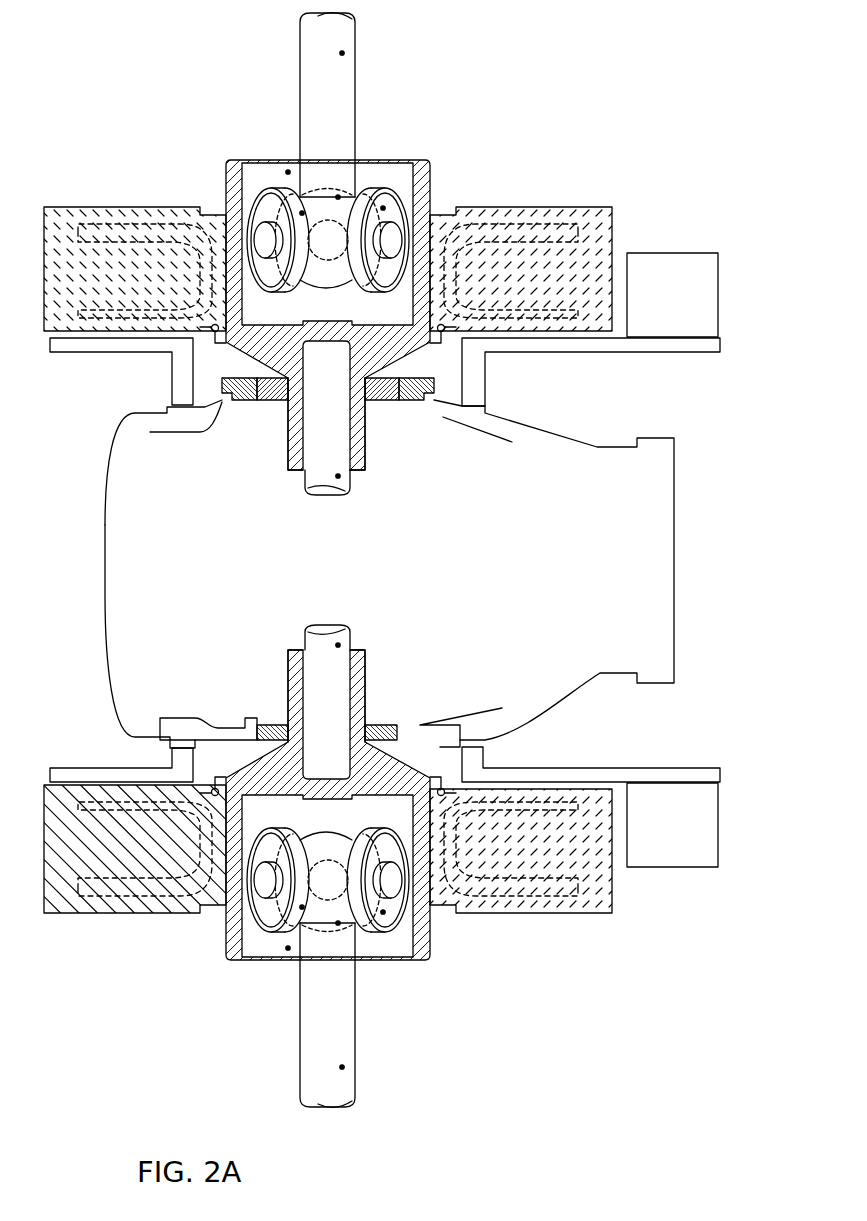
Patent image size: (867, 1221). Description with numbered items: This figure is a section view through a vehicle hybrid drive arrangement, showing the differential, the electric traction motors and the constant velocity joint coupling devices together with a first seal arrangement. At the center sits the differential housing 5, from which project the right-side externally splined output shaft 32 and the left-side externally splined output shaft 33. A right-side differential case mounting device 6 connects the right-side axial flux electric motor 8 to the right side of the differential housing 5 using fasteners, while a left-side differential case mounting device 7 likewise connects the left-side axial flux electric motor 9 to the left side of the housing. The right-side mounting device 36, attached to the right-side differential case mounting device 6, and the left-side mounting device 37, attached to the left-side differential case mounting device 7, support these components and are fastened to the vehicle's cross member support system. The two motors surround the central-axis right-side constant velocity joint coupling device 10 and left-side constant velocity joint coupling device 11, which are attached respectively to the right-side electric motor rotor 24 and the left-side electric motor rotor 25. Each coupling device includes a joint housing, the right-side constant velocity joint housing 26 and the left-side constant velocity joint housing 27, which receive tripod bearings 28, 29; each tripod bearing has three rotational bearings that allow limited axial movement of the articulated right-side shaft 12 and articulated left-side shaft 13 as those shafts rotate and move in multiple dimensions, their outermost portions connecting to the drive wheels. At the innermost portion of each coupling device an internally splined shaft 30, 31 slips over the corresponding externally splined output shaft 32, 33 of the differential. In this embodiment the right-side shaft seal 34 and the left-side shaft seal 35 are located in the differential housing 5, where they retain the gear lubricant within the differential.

The differential housing 5 is at (105, 520).
The right-side differential case mounting device 6 is at (80, 768).
The left-side differential case mounting device 7 is at (80, 352).
The right-side axial flux electric motor 8 is at (125, 913).
The left-side axial flux electric motor 9 is at (125, 207).
The right-side constant velocity joint coupling device 10 is at (226, 940).
The left-side constant velocity joint coupling device 11 is at (226, 180).
The articulated right-side shaft 12 is at (342, 1067).
The articulated left-side shaft 13 is at (342, 53).
The right-side electric motor rotor 24 is at (215, 789).
The left-side electric motor rotor 25 is at (215, 331).
The right-side constant velocity joint housing 26 is at (288, 948).
The left-side constant velocity joint housing 27 is at (288, 172).
The tripod bearing 28 is at (383, 912).
The tripod bearing 29 is at (383, 208).
The internally splined shaft 30 is at (283, 690).
The internally splined shaft 31 is at (283, 435).
The right-side externally splined output shaft 32 is at (338, 645).
The left-side externally splined output shaft 33 is at (338, 476).
The right-side shaft seal 34 is at (380, 722).
The left-side shaft seal 35 is at (380, 400).
The right-side mounting device 36 is at (722, 855).
The left-side mounting device 37 is at (722, 265).